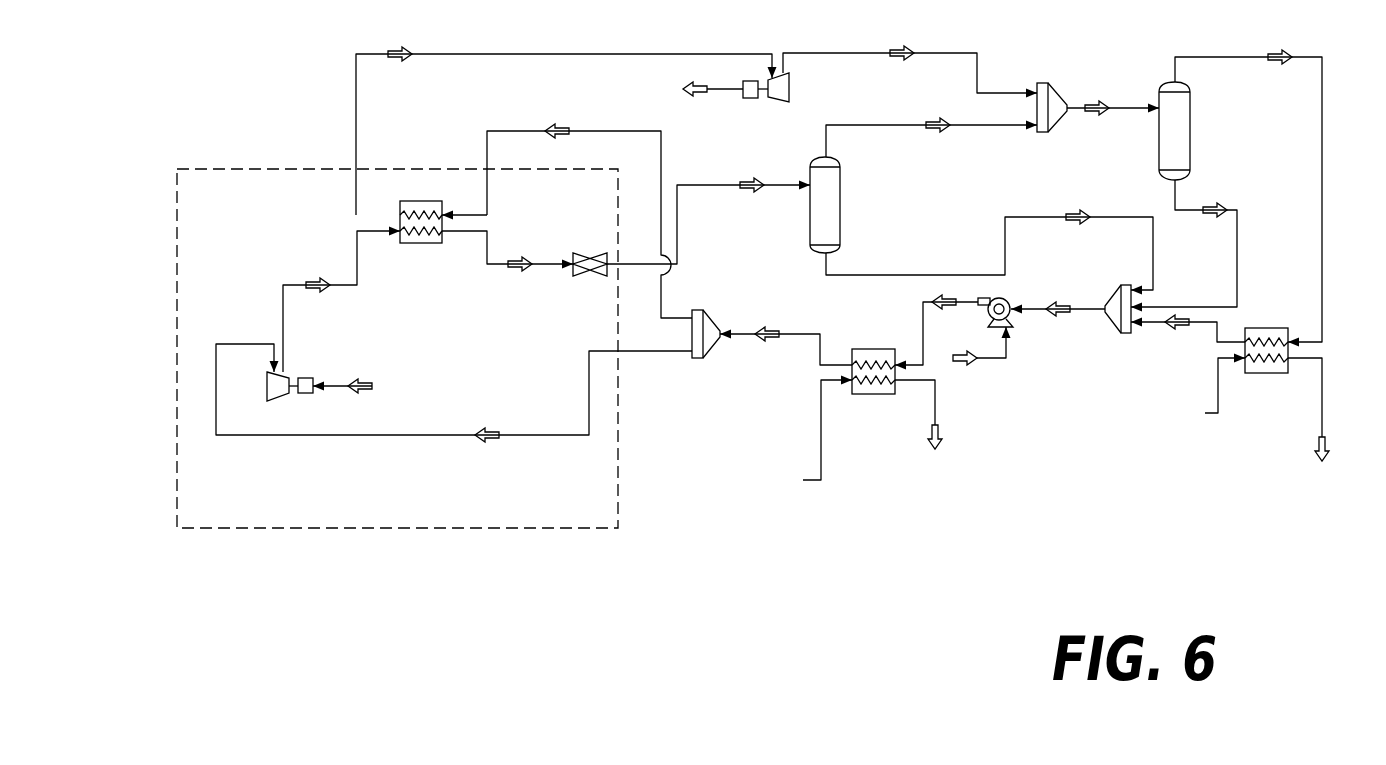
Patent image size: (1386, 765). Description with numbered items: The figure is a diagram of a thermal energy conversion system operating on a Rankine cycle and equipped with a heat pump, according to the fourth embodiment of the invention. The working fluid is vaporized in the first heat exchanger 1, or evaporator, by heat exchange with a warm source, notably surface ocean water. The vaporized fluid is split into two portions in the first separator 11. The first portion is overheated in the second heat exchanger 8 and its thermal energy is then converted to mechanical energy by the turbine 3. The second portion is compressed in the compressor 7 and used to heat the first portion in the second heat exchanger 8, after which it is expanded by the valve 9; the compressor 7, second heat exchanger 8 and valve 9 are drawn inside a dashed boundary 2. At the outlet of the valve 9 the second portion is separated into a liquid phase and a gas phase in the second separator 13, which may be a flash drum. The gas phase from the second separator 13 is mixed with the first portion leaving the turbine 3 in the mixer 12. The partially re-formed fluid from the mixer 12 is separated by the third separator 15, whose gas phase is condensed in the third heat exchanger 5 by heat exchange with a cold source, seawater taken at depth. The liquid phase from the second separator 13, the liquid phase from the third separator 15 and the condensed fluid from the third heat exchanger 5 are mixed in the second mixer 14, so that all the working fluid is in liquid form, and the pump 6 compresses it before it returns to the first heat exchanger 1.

The first heat exchanger 1 is at (872, 349).
The refrigeration cycle unit 2 is at (618, 481).
The turbine 3 is at (775, 102).
The third heat exchanger 5 is at (1258, 328).
The pump 6 is at (1010, 298).
The compressor 7 is at (280, 401).
The second heat exchanger 8 is at (422, 243).
The valve 9 is at (583, 276).
The first separator 11 is at (707, 358).
The mixer 12 is at (1058, 92).
The second separator 13 is at (840, 190).
The second mixer 14 is at (1115, 332).
The third separator 15 is at (1190, 127).